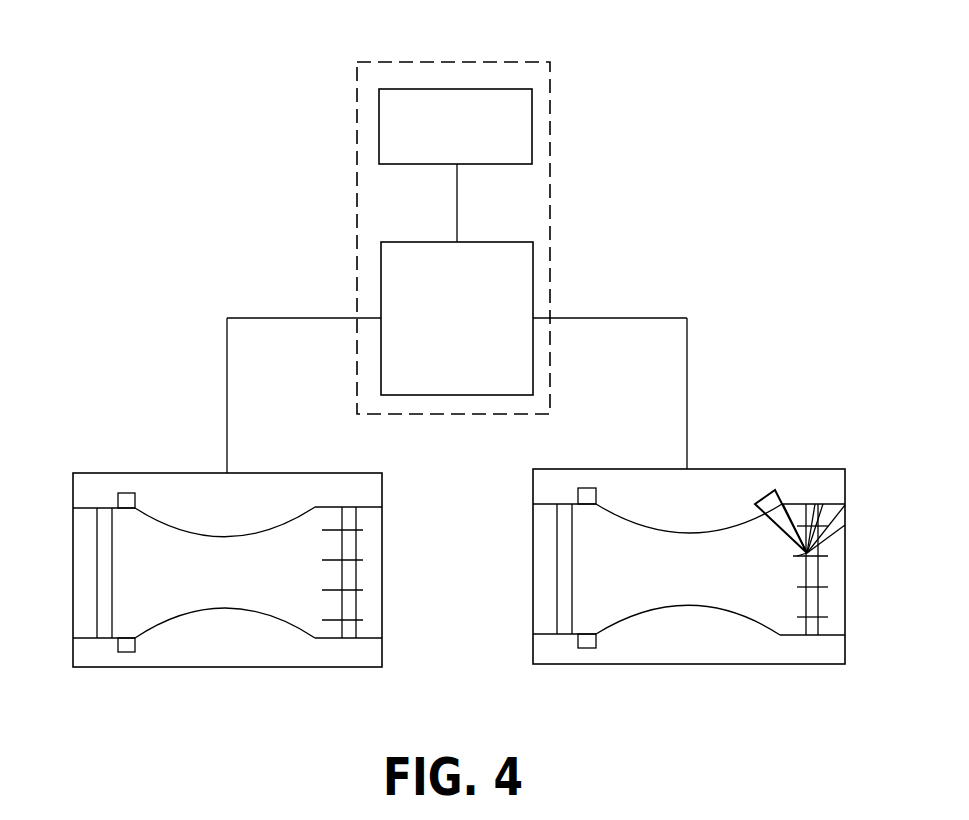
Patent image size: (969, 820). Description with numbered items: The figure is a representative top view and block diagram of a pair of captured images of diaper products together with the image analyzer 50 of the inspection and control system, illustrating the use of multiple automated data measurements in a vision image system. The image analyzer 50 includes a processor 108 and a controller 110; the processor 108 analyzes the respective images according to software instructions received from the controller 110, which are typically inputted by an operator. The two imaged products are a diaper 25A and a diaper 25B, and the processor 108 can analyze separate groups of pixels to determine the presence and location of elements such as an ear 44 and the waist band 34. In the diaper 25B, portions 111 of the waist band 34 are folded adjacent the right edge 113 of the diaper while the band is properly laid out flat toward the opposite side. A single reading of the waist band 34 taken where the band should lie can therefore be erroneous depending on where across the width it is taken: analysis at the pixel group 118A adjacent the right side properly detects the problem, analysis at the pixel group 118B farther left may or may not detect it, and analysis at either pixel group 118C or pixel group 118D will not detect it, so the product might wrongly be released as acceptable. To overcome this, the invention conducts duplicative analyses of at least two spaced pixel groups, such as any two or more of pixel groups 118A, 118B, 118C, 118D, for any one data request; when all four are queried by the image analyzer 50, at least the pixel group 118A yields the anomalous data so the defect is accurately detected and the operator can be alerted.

The image analyzer 50 is at (512, 58).
The controller 110 is at (532, 92).
The processor 108 is at (533, 260).
The diaper 25A is at (153, 518).
The diaper 25B is at (633, 628).
The ear 44 is at (125, 493).
The waist band 34 is at (112, 622).
The right edge 113 is at (686, 526).
The portions of waist band 111 is at (770, 505).
The pixel group 118A is at (814, 510).
The pixel group 118B is at (832, 550).
The pixel group 118C is at (823, 584).
The pixel group 118D is at (817, 612).